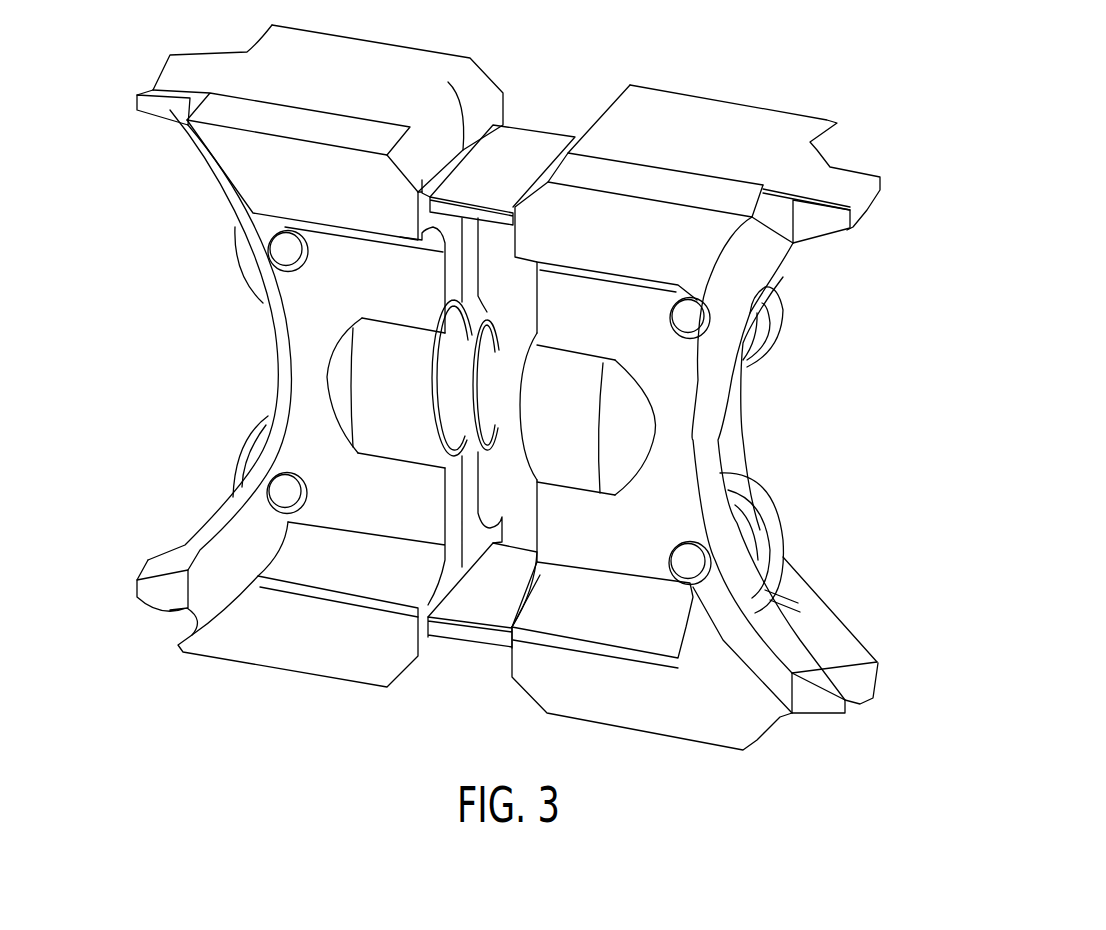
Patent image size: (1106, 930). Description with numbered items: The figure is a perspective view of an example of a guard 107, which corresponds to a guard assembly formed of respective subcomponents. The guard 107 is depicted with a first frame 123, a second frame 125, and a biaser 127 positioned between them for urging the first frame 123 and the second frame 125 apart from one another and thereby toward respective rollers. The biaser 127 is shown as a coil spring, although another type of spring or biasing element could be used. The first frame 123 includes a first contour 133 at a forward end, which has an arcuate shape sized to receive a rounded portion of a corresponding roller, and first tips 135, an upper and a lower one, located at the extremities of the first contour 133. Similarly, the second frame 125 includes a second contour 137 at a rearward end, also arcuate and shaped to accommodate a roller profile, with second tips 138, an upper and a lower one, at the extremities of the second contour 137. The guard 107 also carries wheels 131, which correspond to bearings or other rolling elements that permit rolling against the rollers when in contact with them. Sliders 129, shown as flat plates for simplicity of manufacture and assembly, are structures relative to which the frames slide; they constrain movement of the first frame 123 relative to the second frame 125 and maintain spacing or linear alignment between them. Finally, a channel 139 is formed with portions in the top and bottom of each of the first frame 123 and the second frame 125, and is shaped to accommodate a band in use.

The guard 107 is at (1016, 124).
The first frame 123 is at (660, 720).
The second frame 125 is at (323, 667).
The biaser 127 is at (502, 450).
The sliders 129 is at (513, 142).
The wheels 131 is at (775, 310).
The first contour 133 is at (745, 427).
The first tips 135 is at (837, 237).
The second contour 137 is at (272, 343).
The second tips 138 is at (160, 128).
The channel 139 is at (735, 150).